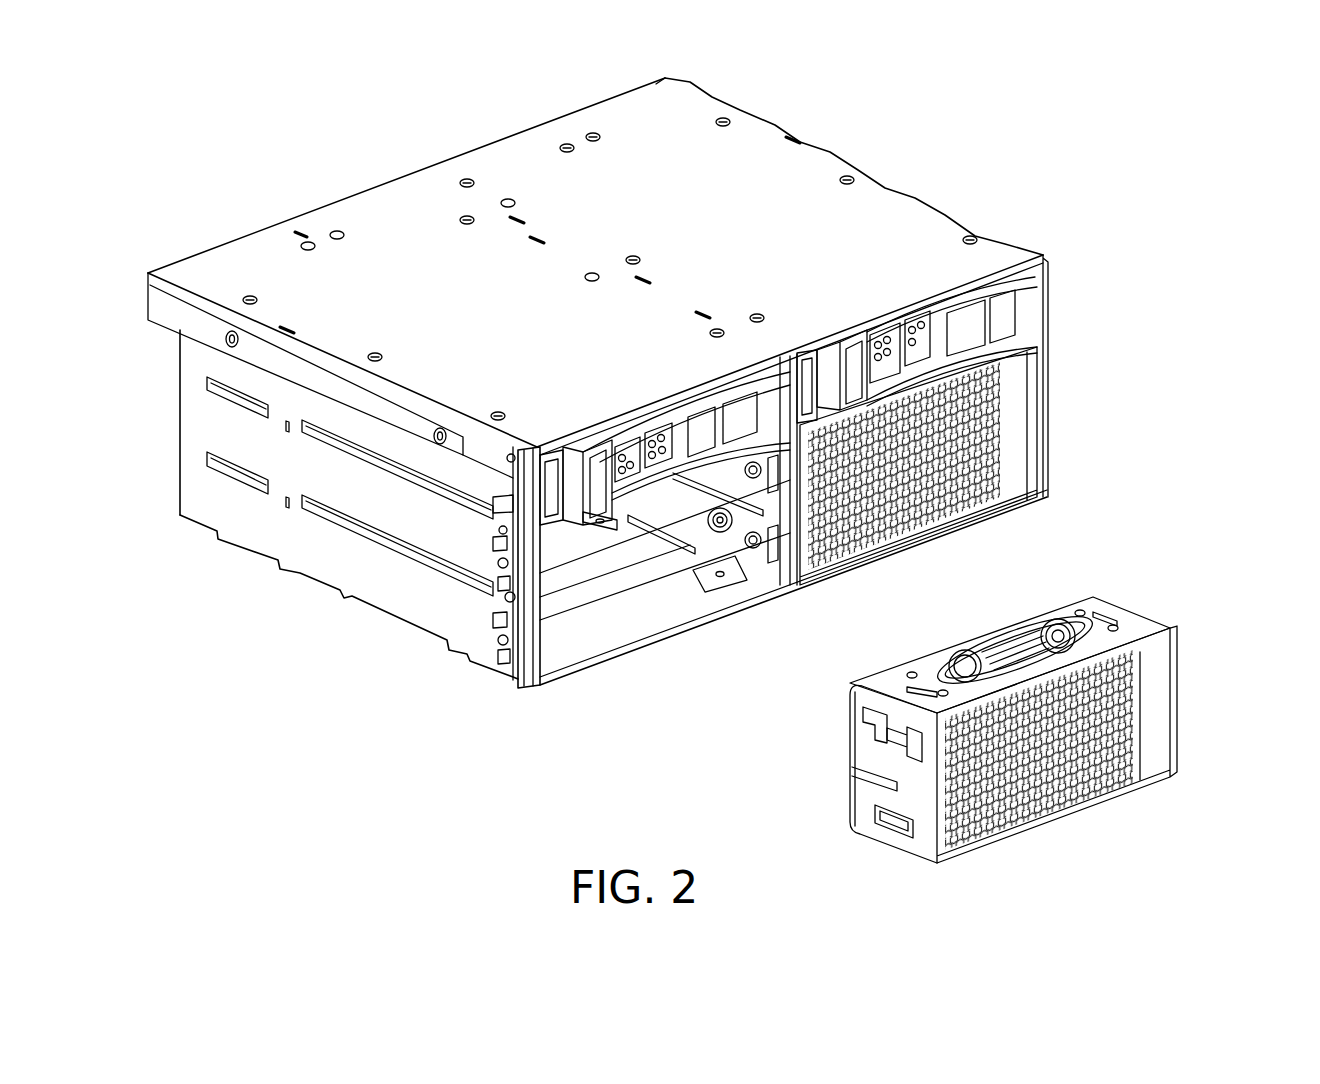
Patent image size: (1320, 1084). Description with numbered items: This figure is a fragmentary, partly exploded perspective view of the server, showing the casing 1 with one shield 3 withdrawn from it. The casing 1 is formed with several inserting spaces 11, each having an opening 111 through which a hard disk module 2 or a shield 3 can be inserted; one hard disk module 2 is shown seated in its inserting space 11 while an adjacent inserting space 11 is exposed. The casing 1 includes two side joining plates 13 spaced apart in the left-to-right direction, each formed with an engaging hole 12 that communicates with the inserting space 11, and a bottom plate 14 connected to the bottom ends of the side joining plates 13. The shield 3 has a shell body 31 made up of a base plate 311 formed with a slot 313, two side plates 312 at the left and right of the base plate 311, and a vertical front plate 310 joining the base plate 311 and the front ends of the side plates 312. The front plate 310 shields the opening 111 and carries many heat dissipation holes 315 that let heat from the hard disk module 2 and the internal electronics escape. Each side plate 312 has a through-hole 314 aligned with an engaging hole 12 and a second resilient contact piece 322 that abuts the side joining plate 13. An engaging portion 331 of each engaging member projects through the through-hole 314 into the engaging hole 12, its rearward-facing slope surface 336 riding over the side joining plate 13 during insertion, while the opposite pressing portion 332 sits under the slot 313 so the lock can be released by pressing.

The casing 1 is at (328, 597).
The inserting space 11 is at (537, 445).
The opening 111 is at (585, 445).
The hard disk module 2 is at (668, 419).
The engaging hole 12 is at (496, 545).
The side joining plate 13 is at (363, 581).
The bottom plate 14 is at (646, 627).
The shield 3 is at (1034, 470).
The shell body 31 is at (1153, 792).
The front plate 310 is at (1160, 716).
The base plate 311 is at (1060, 612).
The side plate 312 is at (862, 817).
The slot 313 is at (1035, 630).
The through-hole 314 is at (878, 724).
The heat dissipation hole 315 is at (1070, 800).
The second resilient contact piece 322 is at (888, 819).
The engaging portion 331 is at (897, 740).
The pressing portion 332 is at (1003, 632).
The slope surface 336 is at (893, 731).